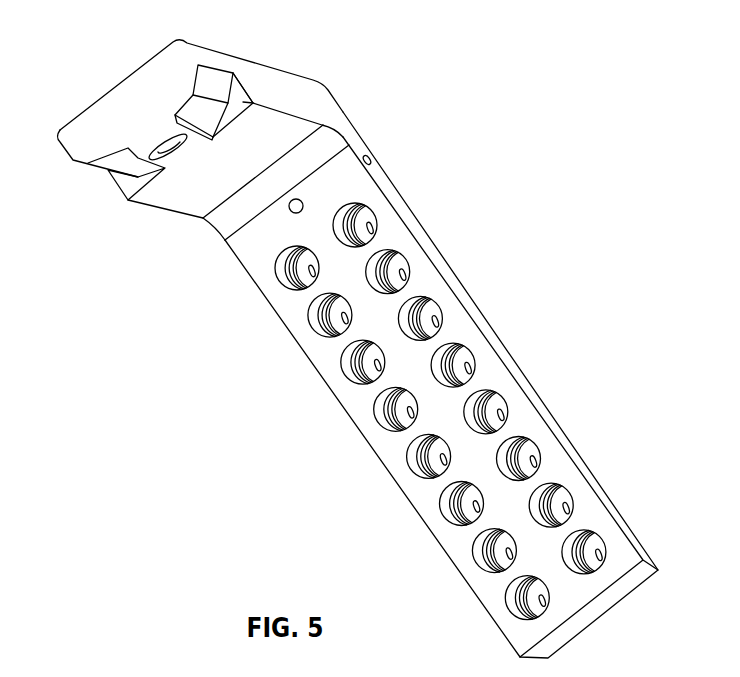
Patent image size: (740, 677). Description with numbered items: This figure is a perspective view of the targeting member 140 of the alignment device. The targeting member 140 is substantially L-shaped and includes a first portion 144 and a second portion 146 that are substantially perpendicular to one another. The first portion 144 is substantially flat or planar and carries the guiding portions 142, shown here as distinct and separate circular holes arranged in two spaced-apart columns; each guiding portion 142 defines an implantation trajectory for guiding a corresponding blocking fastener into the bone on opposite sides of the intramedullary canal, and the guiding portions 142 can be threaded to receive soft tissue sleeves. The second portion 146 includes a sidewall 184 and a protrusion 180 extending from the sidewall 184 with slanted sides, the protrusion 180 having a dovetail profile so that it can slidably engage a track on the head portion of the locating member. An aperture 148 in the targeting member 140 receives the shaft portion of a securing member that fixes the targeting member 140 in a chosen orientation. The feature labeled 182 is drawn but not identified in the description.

The targeting member 140 is at (444, 63).
The guiding portions 142 is at (437, 305).
The first portion 144 is at (348, 403).
The second portion 146 is at (183, 205).
The aperture 148 is at (170, 130).
The protrusion 180 is at (142, 138).
The projection 182 is at (212, 88).
The sidewall 184 is at (243, 102).